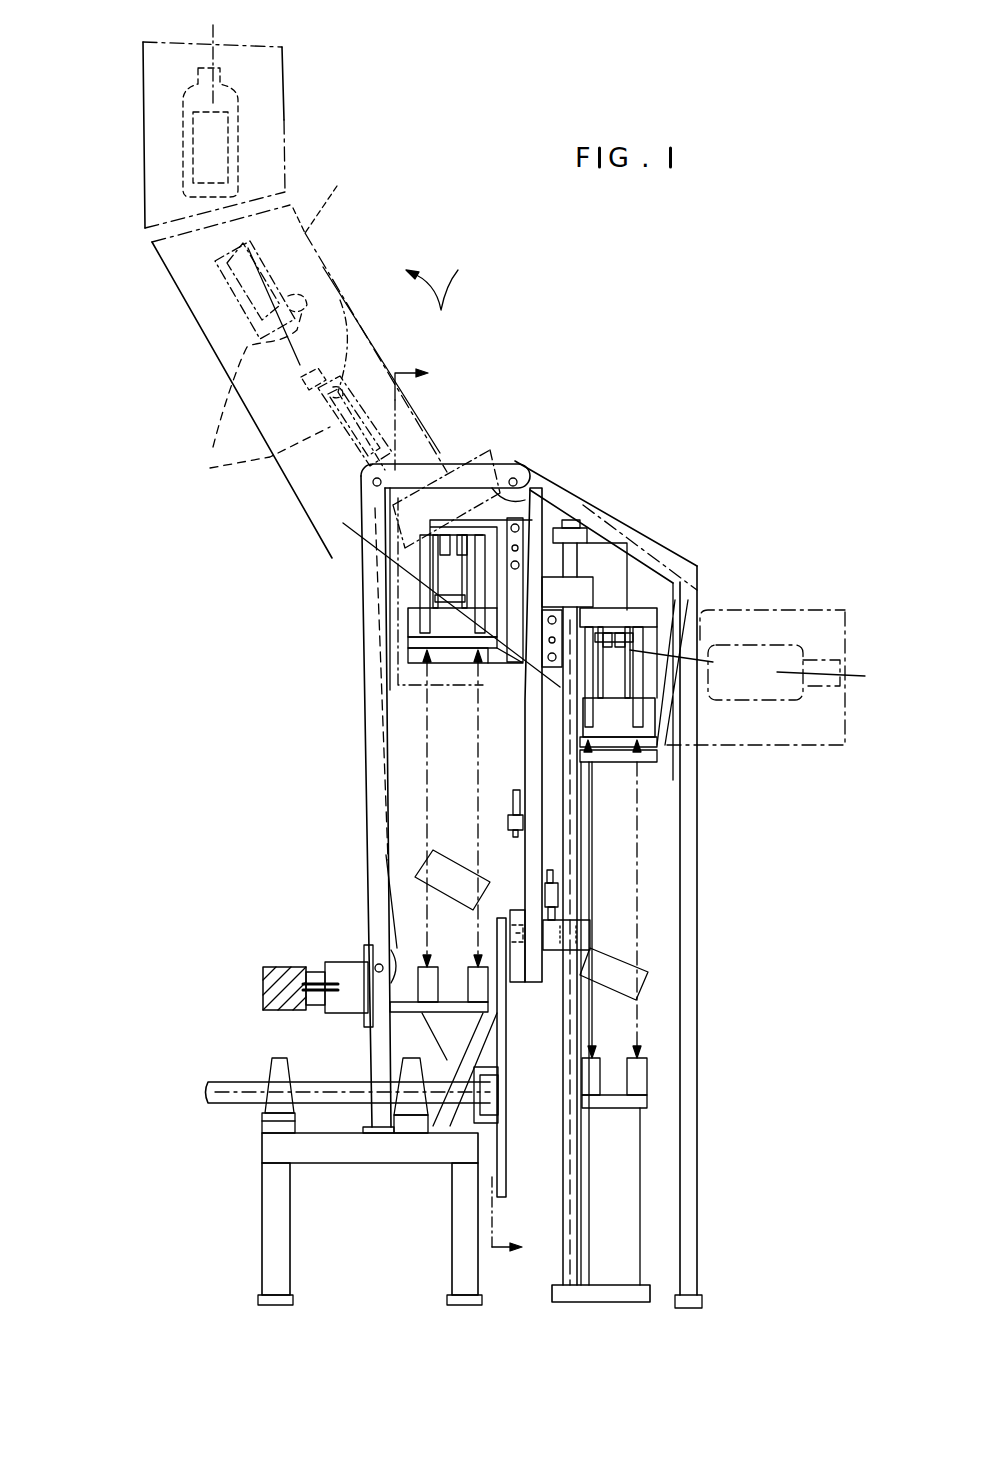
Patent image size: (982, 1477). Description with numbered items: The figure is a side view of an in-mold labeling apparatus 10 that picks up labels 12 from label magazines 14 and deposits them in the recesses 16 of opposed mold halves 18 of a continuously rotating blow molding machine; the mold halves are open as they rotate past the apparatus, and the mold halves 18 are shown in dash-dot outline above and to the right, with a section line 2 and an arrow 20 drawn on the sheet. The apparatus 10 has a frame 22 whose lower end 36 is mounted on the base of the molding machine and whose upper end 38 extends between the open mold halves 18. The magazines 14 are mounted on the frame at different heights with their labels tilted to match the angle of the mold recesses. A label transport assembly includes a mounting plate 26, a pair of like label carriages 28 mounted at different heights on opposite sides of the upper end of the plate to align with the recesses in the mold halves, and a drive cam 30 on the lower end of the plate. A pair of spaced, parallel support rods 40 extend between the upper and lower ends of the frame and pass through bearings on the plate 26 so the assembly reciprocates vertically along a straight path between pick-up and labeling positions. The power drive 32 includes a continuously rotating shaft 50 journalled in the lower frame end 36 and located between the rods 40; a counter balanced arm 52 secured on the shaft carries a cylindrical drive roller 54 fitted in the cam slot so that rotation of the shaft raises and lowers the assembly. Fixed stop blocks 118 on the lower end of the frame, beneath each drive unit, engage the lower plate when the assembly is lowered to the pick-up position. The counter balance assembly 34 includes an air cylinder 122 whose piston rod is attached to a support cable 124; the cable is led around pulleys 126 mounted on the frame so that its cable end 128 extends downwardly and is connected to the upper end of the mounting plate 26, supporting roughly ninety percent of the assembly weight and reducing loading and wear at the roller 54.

The in-mold labeling apparatus 10 is at (258, 844).
The label 12 is at (184, 463).
The label magazine 14 is at (450, 860).
The mold recess 16 is at (346, 312).
The mold half 18 is at (285, 155).
The label supply 20 is at (451, 281).
The section line 2- 2 is at (471, 810).
The frame 22 is at (372, 762).
The mounting plate 26 is at (535, 848).
The label carriage 28 is at (400, 625).
The drive cam 30 is at (516, 912).
The power drive 32 is at (238, 1110).
The counter balance assembly 34 is at (258, 992).
The lower end of frame 36 is at (693, 1180).
The upper end of frame 38 is at (602, 515).
The support rod 40 is at (567, 1260).
The shaft 50 is at (210, 1092).
The counter balanced arm 52 is at (500, 1078).
The drive member or roller 54 is at (530, 937).
The fixed stop block 118 is at (474, 985).
The air cylinder 122 is at (265, 965).
The support cable 124 is at (362, 505).
The pulley 126 is at (509, 466).
The cable end 128 is at (530, 505).